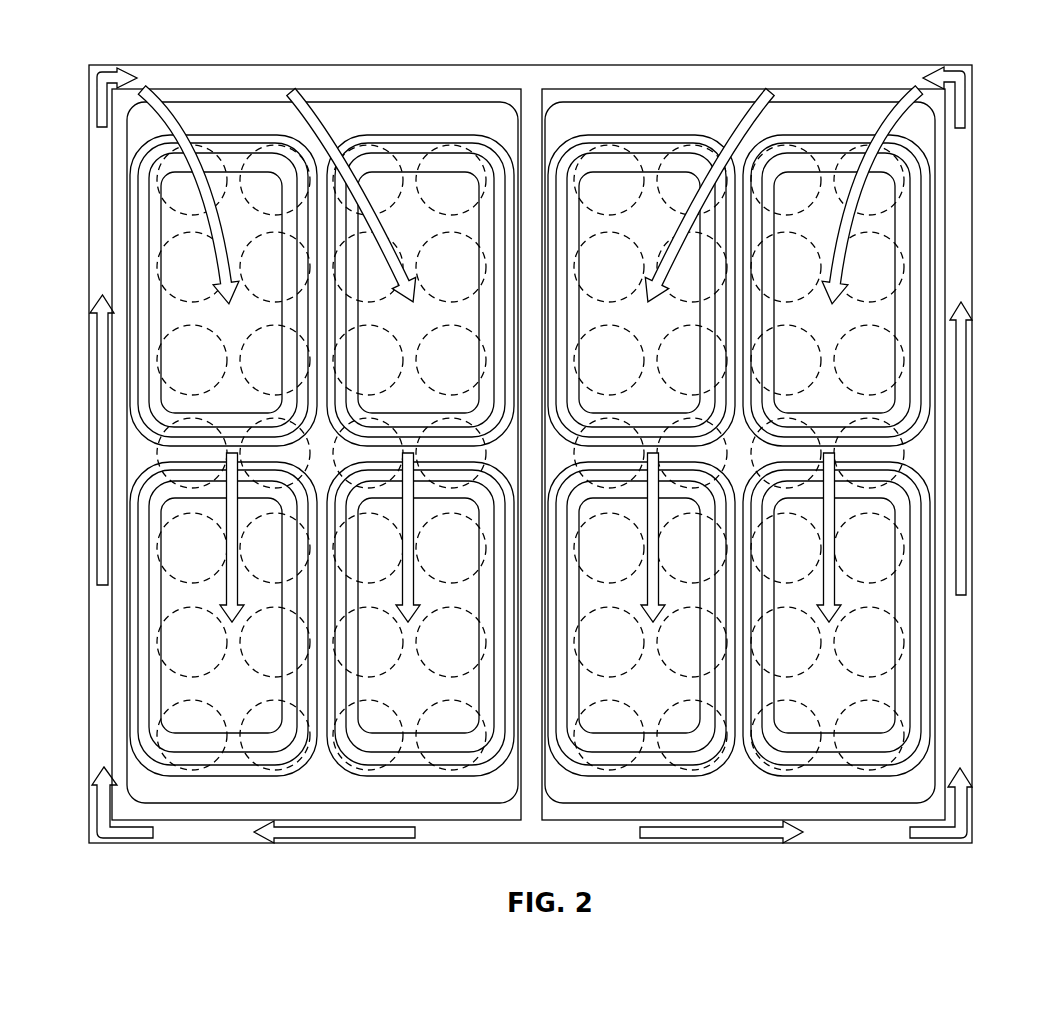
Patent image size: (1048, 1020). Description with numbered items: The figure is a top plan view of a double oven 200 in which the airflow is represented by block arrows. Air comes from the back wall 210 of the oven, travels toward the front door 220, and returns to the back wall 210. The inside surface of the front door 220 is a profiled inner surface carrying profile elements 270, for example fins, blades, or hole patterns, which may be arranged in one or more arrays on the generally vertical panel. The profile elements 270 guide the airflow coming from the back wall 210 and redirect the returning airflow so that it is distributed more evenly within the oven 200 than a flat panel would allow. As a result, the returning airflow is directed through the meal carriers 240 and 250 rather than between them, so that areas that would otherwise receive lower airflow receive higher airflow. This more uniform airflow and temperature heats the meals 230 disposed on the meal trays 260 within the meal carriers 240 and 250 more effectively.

The double oven 200 is at (558, 447).
The back wall 210 is at (506, 843).
The front door 220 is at (531, 65).
The meals 230 is at (682, 135).
The meal carrier 240 is at (385, 101).
The meal carrier 250 is at (593, 88).
The meal trays 260 is at (668, 101).
The profile elements 270 is at (131, 79).